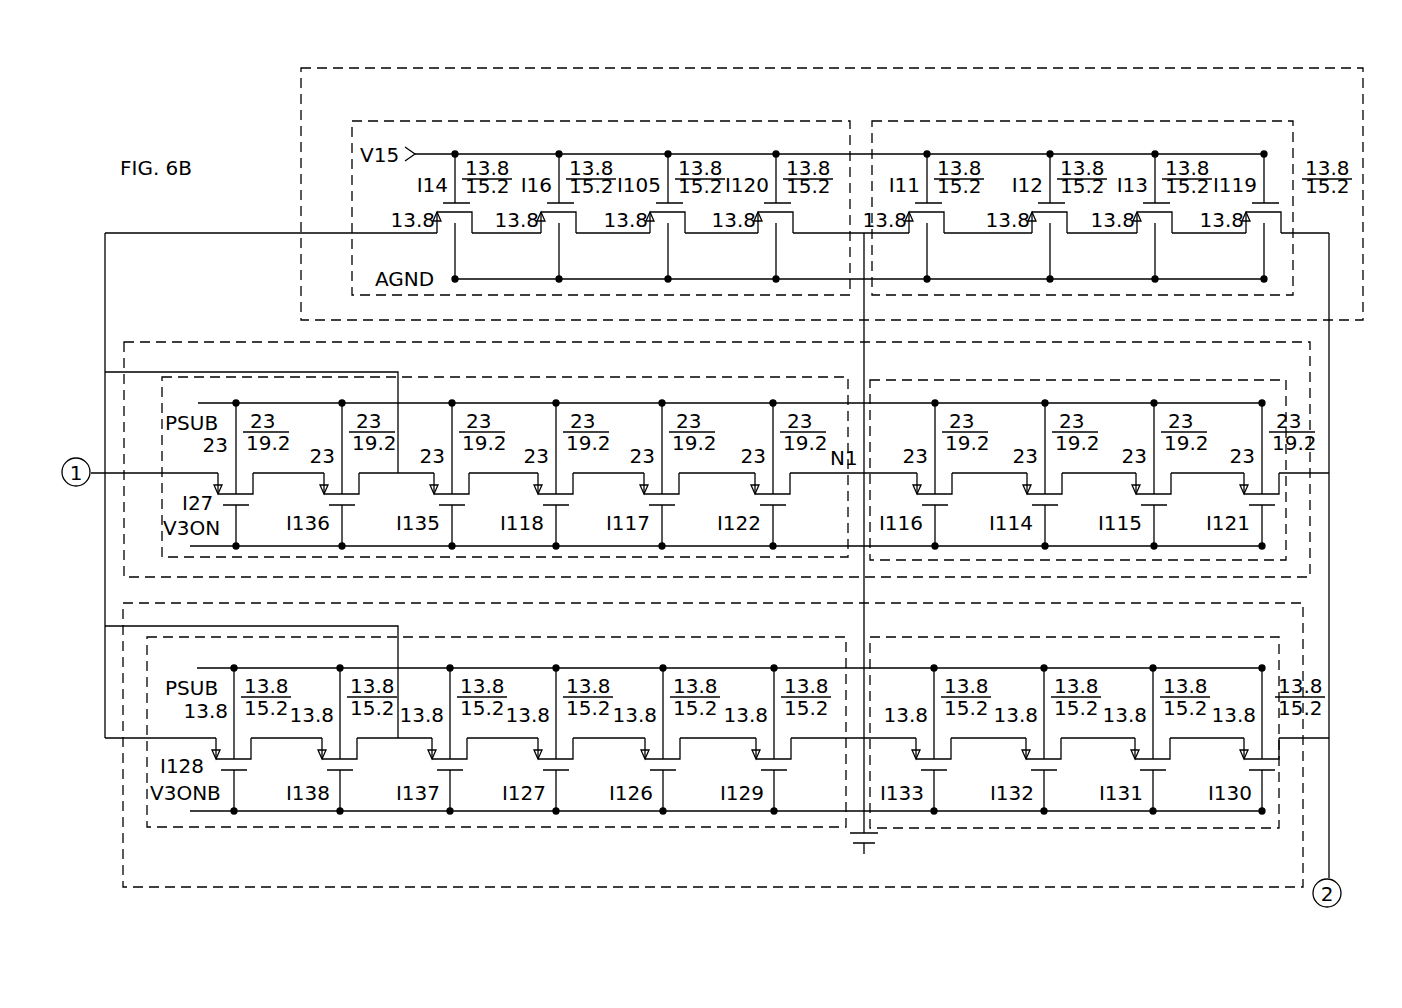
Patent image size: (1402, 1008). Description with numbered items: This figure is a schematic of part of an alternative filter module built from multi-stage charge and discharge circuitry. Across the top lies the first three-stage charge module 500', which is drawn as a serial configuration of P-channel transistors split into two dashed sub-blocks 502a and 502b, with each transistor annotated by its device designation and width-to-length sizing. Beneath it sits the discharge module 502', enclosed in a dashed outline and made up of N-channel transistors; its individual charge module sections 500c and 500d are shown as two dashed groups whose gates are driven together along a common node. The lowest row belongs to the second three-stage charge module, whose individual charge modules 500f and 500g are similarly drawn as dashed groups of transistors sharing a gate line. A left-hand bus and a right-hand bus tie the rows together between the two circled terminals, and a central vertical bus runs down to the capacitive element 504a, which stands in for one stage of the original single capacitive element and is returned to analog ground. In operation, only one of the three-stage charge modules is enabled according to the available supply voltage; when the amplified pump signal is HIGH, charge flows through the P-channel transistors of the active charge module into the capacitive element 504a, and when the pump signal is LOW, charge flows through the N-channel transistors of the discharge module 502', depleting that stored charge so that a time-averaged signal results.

The first three-stage charge module 500' is at (851, 194).
The first transistor group 502a is at (427, 121).
The second transistor group 502b is at (1165, 125).
The discharge module 502' is at (759, 459).
The charge module 500c is at (176, 373).
The charge module 500d is at (1287, 516).
The charge module 500f is at (275, 829).
The charge module 500g is at (970, 829).
The capacitive element 504a is at (850, 835).